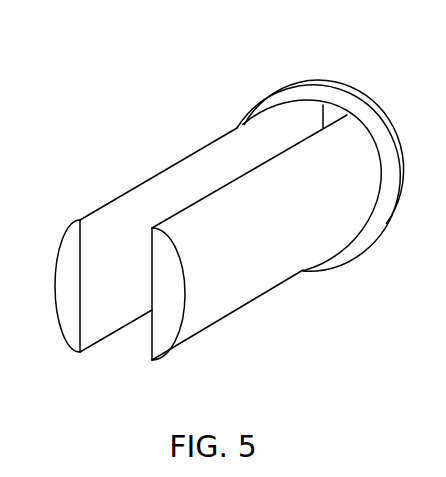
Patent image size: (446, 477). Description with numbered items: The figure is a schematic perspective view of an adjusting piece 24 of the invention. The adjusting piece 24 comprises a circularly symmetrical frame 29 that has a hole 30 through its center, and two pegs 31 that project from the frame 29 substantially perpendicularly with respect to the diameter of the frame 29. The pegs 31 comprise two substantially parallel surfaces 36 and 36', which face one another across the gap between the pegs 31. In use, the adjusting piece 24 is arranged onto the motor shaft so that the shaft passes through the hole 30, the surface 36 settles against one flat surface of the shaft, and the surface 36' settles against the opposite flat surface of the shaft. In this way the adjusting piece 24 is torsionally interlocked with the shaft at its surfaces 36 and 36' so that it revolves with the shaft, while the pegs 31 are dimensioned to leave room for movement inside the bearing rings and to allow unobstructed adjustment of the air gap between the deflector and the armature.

The adjusting piece 24 is at (198, 103).
The frame 29 is at (372, 128).
The hole 30 is at (330, 117).
The pegs 31 is at (72, 248).
The surface 36 is at (133, 327).
The surface 36' is at (100, 364).